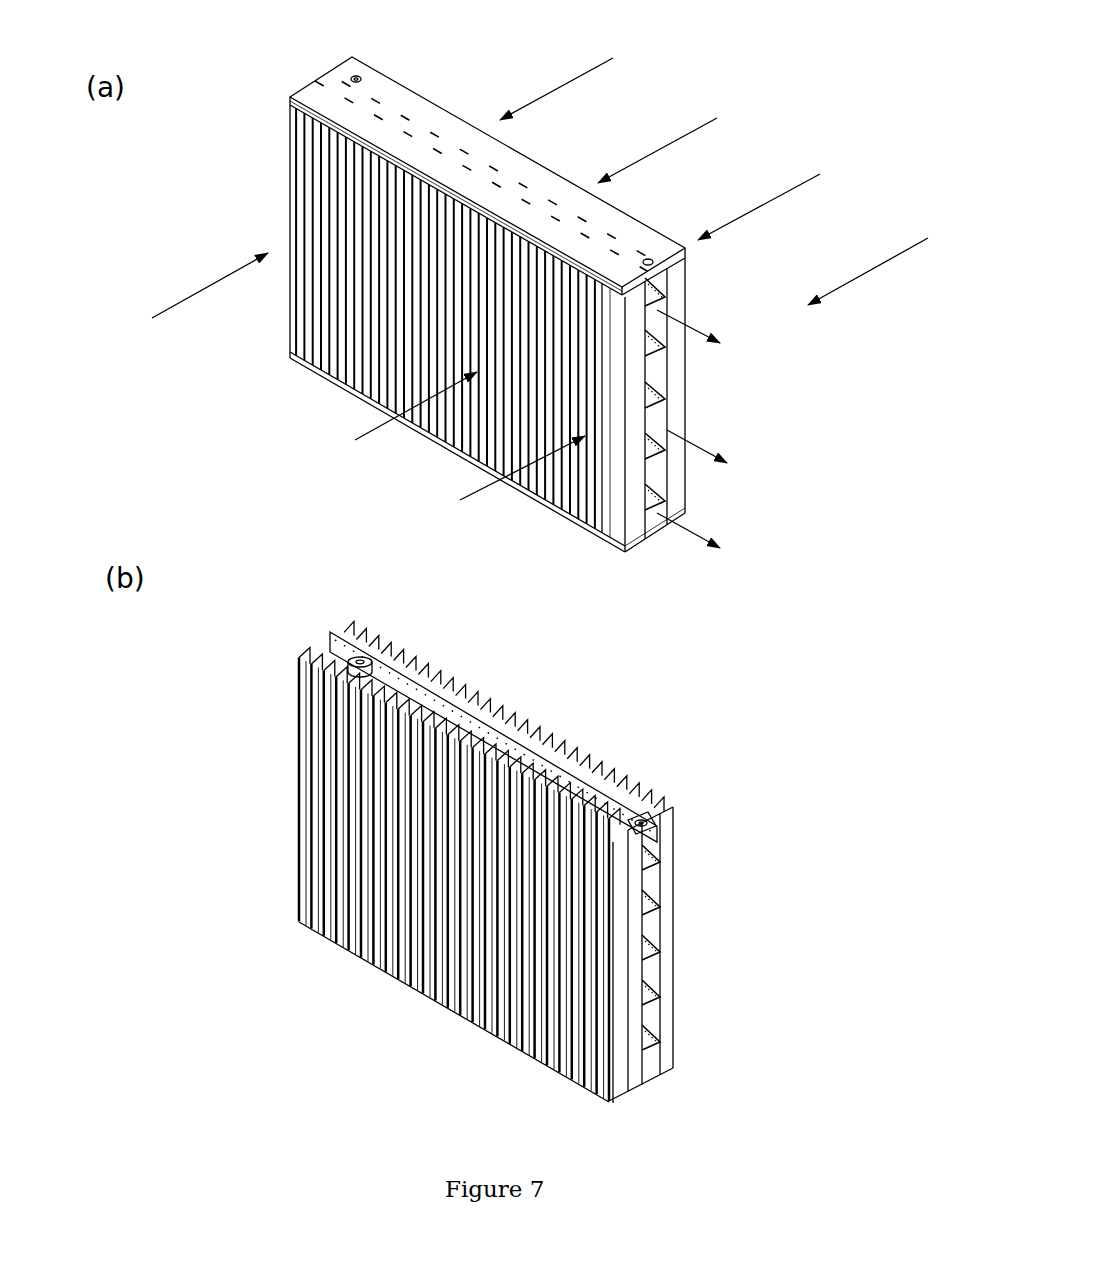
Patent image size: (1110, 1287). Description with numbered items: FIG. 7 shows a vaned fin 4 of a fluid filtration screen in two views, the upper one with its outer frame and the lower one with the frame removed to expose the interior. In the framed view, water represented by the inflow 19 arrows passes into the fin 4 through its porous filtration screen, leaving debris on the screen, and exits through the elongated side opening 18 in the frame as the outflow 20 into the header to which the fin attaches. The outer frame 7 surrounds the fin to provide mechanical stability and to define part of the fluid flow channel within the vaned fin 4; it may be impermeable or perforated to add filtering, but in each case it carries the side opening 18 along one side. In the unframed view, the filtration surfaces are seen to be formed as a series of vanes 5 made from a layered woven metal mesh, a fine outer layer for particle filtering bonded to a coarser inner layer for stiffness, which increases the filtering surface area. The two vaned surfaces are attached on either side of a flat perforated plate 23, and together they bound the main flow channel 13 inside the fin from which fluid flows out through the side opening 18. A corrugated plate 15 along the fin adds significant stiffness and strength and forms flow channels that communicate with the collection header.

The vaned fin 4 is at (284, 70).
The outer frame 7 is at (425, 118).
The inflow 19 is at (253, 381).
The side opening 18 is at (673, 372).
The outflow 20 is at (714, 413).
The vanes 5 is at (368, 636).
The flat perforated plate 23 is at (437, 678).
The main flow channel 13 is at (521, 746).
The corrugated plate 15 is at (652, 955).